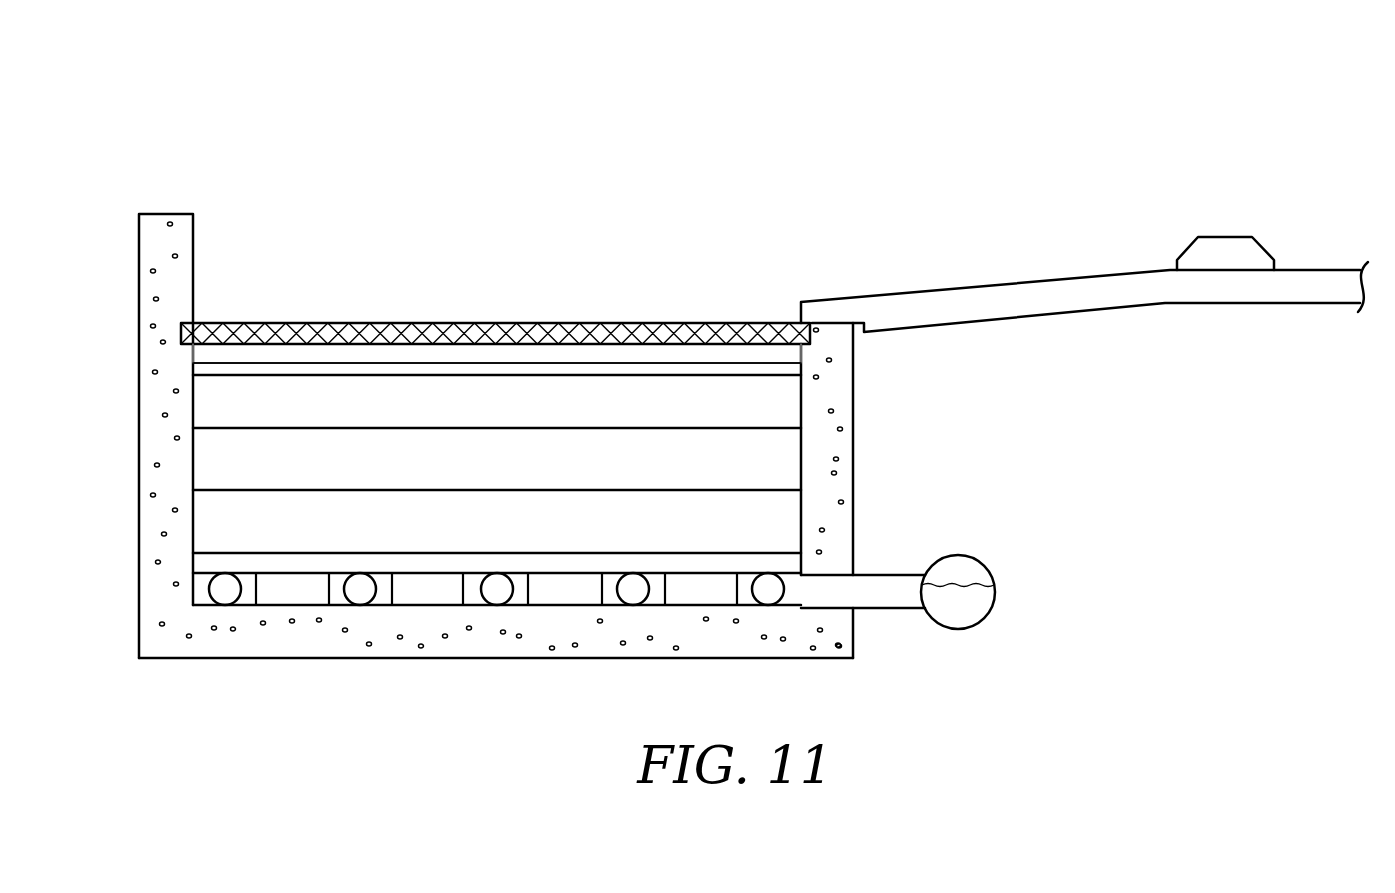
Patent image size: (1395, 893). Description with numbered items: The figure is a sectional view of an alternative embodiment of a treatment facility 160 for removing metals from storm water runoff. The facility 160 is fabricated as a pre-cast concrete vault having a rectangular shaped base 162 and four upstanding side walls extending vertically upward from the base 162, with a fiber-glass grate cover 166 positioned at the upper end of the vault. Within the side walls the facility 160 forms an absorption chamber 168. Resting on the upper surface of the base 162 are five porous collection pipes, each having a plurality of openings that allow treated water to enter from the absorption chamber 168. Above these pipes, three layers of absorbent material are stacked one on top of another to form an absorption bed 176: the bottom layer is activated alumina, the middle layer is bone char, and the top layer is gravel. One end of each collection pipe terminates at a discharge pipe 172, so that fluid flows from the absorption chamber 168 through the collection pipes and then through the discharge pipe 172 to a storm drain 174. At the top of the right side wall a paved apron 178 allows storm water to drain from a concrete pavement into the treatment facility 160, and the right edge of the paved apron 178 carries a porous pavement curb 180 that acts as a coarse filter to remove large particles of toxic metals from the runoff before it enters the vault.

The treatment facility 160 is at (300, 237).
The base 162 is at (262, 636).
The fiber-glass grate cover 166 is at (750, 323).
The absorption chamber 168 is at (650, 366).
The discharge pipe 172 is at (893, 585).
The storm drain 174 is at (977, 570).
The absorption bed 176 is at (404, 376).
The paved apron 178 is at (1021, 283).
The porous pavement curb 180 is at (1224, 250).